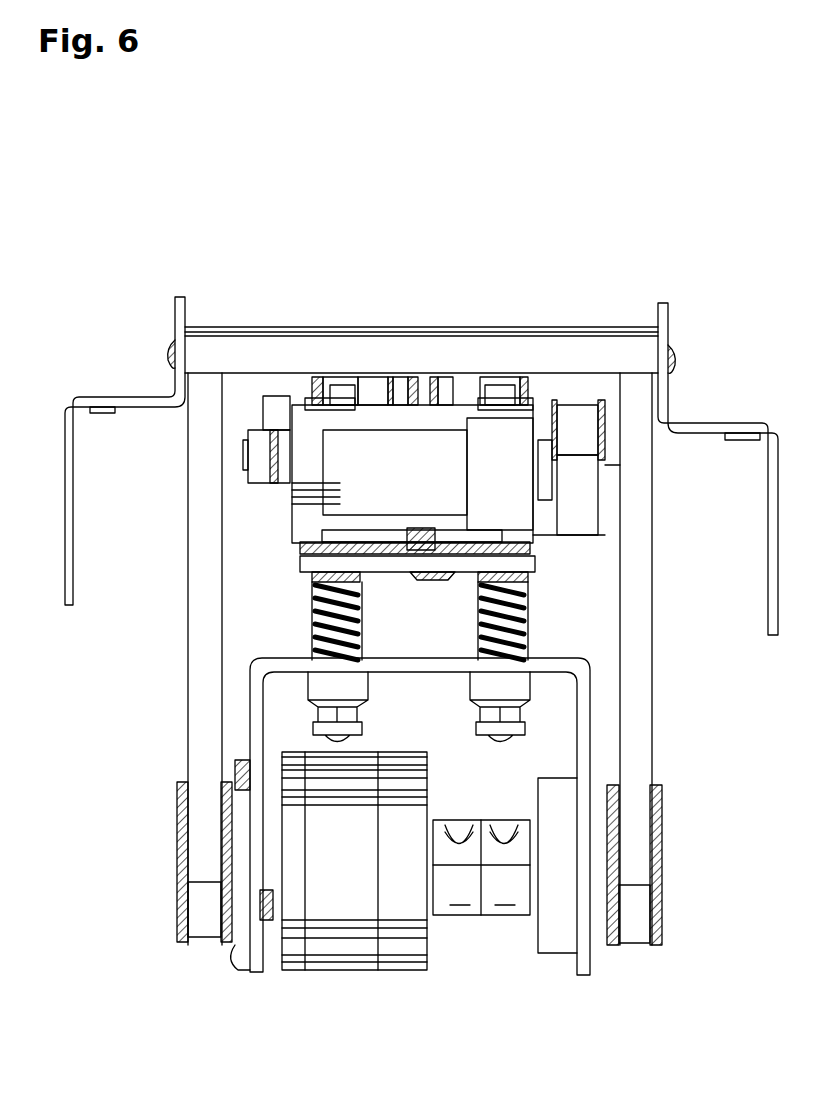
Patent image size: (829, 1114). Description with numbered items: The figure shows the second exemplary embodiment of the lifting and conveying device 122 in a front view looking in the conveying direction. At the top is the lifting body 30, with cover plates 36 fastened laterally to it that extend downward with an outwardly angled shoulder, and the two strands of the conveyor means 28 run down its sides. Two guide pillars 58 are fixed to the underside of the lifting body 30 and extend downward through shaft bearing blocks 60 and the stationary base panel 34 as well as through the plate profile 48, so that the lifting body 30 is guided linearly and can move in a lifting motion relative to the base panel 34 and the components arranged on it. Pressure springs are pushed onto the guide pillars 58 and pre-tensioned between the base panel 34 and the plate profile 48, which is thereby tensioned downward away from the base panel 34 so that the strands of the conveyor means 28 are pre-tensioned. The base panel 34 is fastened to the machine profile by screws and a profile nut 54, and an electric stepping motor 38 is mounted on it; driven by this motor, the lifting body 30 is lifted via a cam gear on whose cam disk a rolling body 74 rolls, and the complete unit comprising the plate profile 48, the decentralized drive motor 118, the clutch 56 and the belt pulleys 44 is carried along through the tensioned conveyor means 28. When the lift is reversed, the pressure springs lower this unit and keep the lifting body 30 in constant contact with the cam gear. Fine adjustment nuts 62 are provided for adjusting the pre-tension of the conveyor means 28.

The lifting and conveying device 122 is at (205, 220).
The lifting body 30 is at (612, 345).
The cover plate 36 is at (125, 400).
The conveyor means 28 is at (205, 712).
The belt pulley 44 is at (185, 785).
The rolling body 74 is at (415, 400).
The shaft bearing block 60 is at (318, 398).
The guide pillar 58 is at (345, 385).
The profile nut 54 is at (590, 530).
The electric stepping motor 38 is at (340, 510).
The base panel 34 is at (345, 555).
The plate profile 48 is at (430, 672).
The fine adjustment nut 62 is at (335, 735).
The drive motor 118 is at (352, 952).
The clutch 56 is at (490, 915).